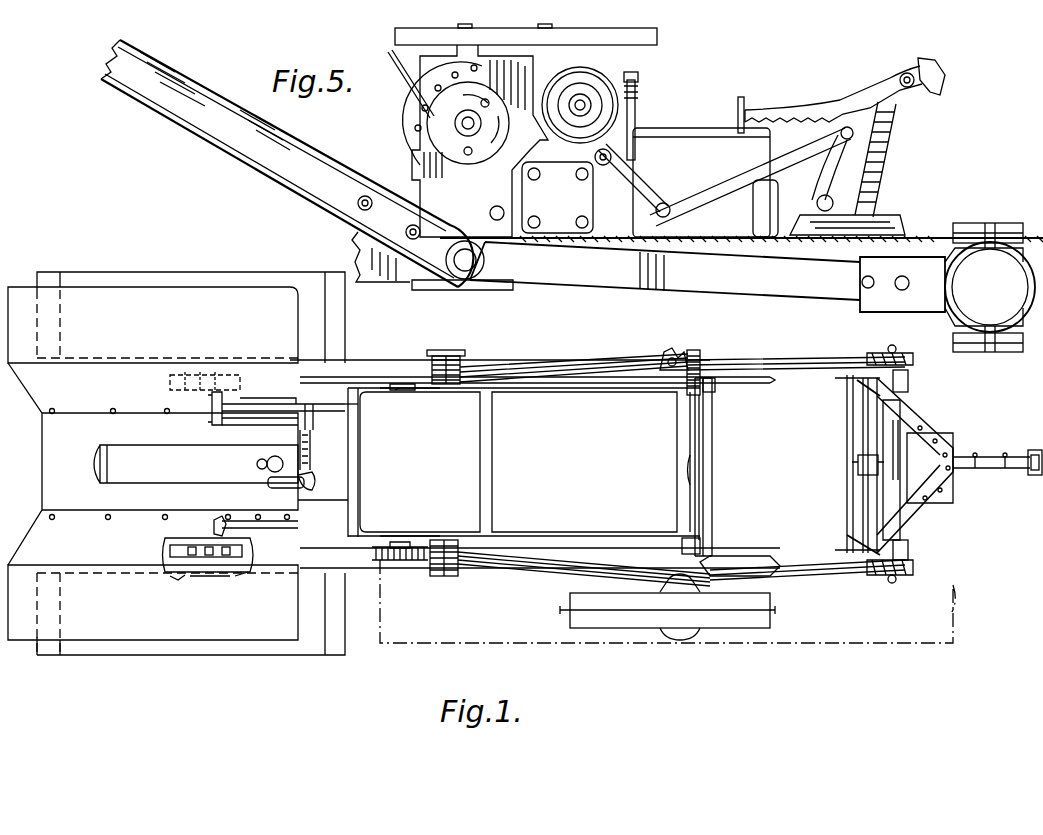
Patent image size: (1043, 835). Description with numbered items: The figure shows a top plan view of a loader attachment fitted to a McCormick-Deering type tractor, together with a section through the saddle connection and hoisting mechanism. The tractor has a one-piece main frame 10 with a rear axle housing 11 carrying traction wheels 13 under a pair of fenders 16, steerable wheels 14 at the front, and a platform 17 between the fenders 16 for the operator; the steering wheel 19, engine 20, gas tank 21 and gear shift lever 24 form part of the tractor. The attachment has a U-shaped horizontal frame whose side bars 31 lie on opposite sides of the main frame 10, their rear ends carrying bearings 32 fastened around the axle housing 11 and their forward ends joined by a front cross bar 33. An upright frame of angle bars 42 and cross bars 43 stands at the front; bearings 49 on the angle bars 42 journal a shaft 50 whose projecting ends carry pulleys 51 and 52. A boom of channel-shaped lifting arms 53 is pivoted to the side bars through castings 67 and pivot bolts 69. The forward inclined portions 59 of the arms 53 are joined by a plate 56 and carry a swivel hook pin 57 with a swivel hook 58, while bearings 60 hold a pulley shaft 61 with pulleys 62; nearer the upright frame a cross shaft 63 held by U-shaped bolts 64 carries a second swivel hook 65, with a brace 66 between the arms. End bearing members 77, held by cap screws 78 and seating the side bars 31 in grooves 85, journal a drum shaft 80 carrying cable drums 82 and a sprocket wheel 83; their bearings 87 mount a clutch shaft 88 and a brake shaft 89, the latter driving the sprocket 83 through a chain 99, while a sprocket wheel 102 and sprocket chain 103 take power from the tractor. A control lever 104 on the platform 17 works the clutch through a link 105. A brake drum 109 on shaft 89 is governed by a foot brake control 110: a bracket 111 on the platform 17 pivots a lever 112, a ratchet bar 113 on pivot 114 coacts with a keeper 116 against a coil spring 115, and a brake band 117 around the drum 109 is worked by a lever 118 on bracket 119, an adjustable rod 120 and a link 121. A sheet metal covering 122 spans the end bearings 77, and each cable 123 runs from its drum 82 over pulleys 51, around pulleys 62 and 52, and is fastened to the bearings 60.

In FIG. 1, the main frame 10 is at (342, 503).
In FIG. 1, the rear axle housing 11 is at (195, 372).
In FIG. 1, the traction wheels 13 is at (191, 463).
In FIG. 1, the steerable wheels 14 is at (770, 620).
In FIG. 1, the fenders 16 is at (153, 471).
In FIG. 5, the platform 17 is at (930, 236).
In FIG. 1, the platform 17 is at (153, 464).
In FIG. 1, the steering wheel 19 is at (270, 490).
In FIG. 1, the engine 20 is at (591, 462).
In FIG. 1, the gas tank 21 is at (420, 462).
In FIG. 1, the gear shift lever 24 is at (256, 466).
In FIG. 5, the side bars 31 is at (665, 271).
In FIG. 1, the side bars 31 is at (602, 400).
In FIG. 5, the bearings 32 is at (947, 287).
In FIG. 1, the bearings 32 is at (158, 548).
In FIG. 1, the front cross bar 33 is at (706, 435).
In FIG. 1, the angle bars 42 is at (715, 382).
In FIG. 1, the cross bars 43 is at (713, 482).
In FIG. 1, the bearings 49 is at (680, 545).
In FIG. 1, the shaft 50 is at (692, 425).
In FIG. 1, the pulleys 51 is at (740, 555).
In FIG. 1, the pulleys 52 is at (690, 360).
In FIG. 5, the lifting arms 53 is at (258, 155).
In FIG. 1, the lifting arms 53 is at (775, 372).
In FIG. 1, the plate 56 is at (930, 464).
In FIG. 1, the swivel hook pin 57 is at (1030, 470).
In FIG. 1, the swivel hook 58 is at (1034, 454).
In FIG. 1, the inclined portions 59 is at (905, 410).
In FIG. 1, the bearings 60 is at (908, 380).
In FIG. 1, the pulley shaft 61 is at (900, 440).
In FIG. 1, the pulleys 62 is at (925, 345).
In FIG. 1, the cross shaft 63 is at (845, 430).
In FIG. 1, the U-shaped bolts 64 is at (860, 388).
In FIG. 1, the swivel hook 65 is at (858, 470).
In FIG. 1, the brace 66 is at (856, 458).
In FIG. 5, the castings 67 is at (430, 295).
In FIG. 5, the pivot bolts 69 is at (421, 237).
In FIG. 5, the end bearing members 77 is at (480, 141).
In FIG. 5, the cap screws 78 is at (490, 216).
In FIG. 5, the drum shaft 80 is at (468, 126).
In FIG. 1, the drum shaft 80 is at (448, 350).
In FIG. 5, the cable drums 82 is at (468, 123).
In FIG. 1, the cable drums 82 is at (462, 364).
In FIG. 5, the sprocket wheel 83 is at (412, 132).
In FIG. 5, the grooves 85 is at (478, 290).
In FIG. 1, the bearings 87 is at (400, 390).
In FIG. 1, the clutch shaft 88 is at (400, 565).
In FIG. 5, the brake shaft 89 is at (570, 112).
In FIG. 1, the brake shaft 89 is at (400, 384).
In FIG. 5, the chain 99 is at (450, 78).
In FIG. 1, the sprocket wheel 102 is at (420, 565).
In FIG. 1, the sprocket chain 103 is at (372, 560).
In FIG. 1, the control lever 104 is at (220, 516).
In FIG. 1, the link 105 is at (262, 528).
In FIG. 5, the brake drum 109 is at (660, 75).
In FIG. 5, the foot brake control 110 is at (945, 75).
In FIG. 1, the foot brake control 110 is at (210, 405).
In FIG. 5, the bracket 111 is at (875, 212).
In FIG. 1, the bracket 111 is at (280, 400).
In FIG. 5, the lever 112 is at (818, 168).
In FIG. 5, the ratchet bar 113 is at (815, 108).
In FIG. 1, the ratchet bar 113 is at (316, 425).
In FIG. 5, the pivot 114 is at (904, 72).
In FIG. 1, the pivot 114 is at (230, 426).
In FIG. 5, the coil spring 115 is at (888, 125).
In FIG. 5, the keeper 116 is at (744, 100).
In FIG. 1, the keeper 116 is at (312, 455).
In FIG. 5, the brake band 117 is at (590, 70).
In FIG. 5, the lever 118 is at (668, 200).
In FIG. 5, the bracket 119 is at (606, 166).
In FIG. 5, the adjustable rod 120 is at (645, 130).
In FIG. 5, the link 121 is at (726, 182).
In FIG. 1, the link 121 is at (348, 406).
In FIG. 5, the sheet metal covering 122 is at (657, 37).
In FIG. 1, the sheet metal covering 122 is at (412, 390).
In FIG. 5, the cable 123 is at (398, 80).
In FIG. 1, the cable 123 is at (790, 362).